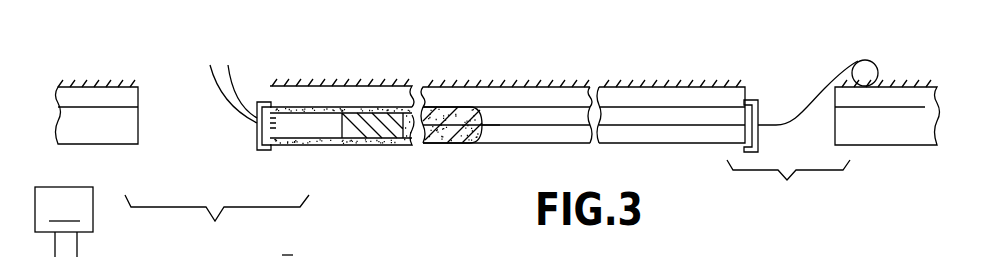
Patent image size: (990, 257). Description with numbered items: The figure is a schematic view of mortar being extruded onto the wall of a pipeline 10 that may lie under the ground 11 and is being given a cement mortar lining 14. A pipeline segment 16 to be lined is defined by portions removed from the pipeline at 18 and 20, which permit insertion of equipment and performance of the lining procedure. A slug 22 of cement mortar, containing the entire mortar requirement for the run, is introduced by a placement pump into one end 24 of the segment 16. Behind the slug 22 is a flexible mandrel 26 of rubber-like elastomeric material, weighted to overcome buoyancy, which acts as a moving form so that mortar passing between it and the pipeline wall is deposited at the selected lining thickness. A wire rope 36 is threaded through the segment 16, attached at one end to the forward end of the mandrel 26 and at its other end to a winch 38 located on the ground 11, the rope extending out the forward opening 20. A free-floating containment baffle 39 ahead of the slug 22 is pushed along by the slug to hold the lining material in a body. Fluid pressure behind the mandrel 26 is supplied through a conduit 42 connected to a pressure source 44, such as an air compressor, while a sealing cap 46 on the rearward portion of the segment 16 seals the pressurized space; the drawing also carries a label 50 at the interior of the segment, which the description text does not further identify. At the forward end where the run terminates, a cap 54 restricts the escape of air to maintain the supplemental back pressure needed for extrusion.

The pipeline 10 is at (632, 100).
The ground 11 is at (442, 97).
The cement mortar lining 14 is at (310, 107).
The pipeline segment 16 is at (555, 144).
The removed portion 18 is at (177, 97).
The forward opening 20 is at (790, 82).
The mortar slug 22 is at (445, 143).
The end of segment 24 is at (258, 146).
The flexible mandrel 26 is at (358, 140).
The wire rope 36 is at (773, 118).
The winch 38 is at (873, 60).
The containment baffle 39 is at (486, 140).
The conduit 42 is at (230, 107).
The pressure source 44 is at (64, 222).
The sealing cap 46 is at (255, 112).
The cavity 50 is at (290, 106).
The cap 54 is at (762, 138).